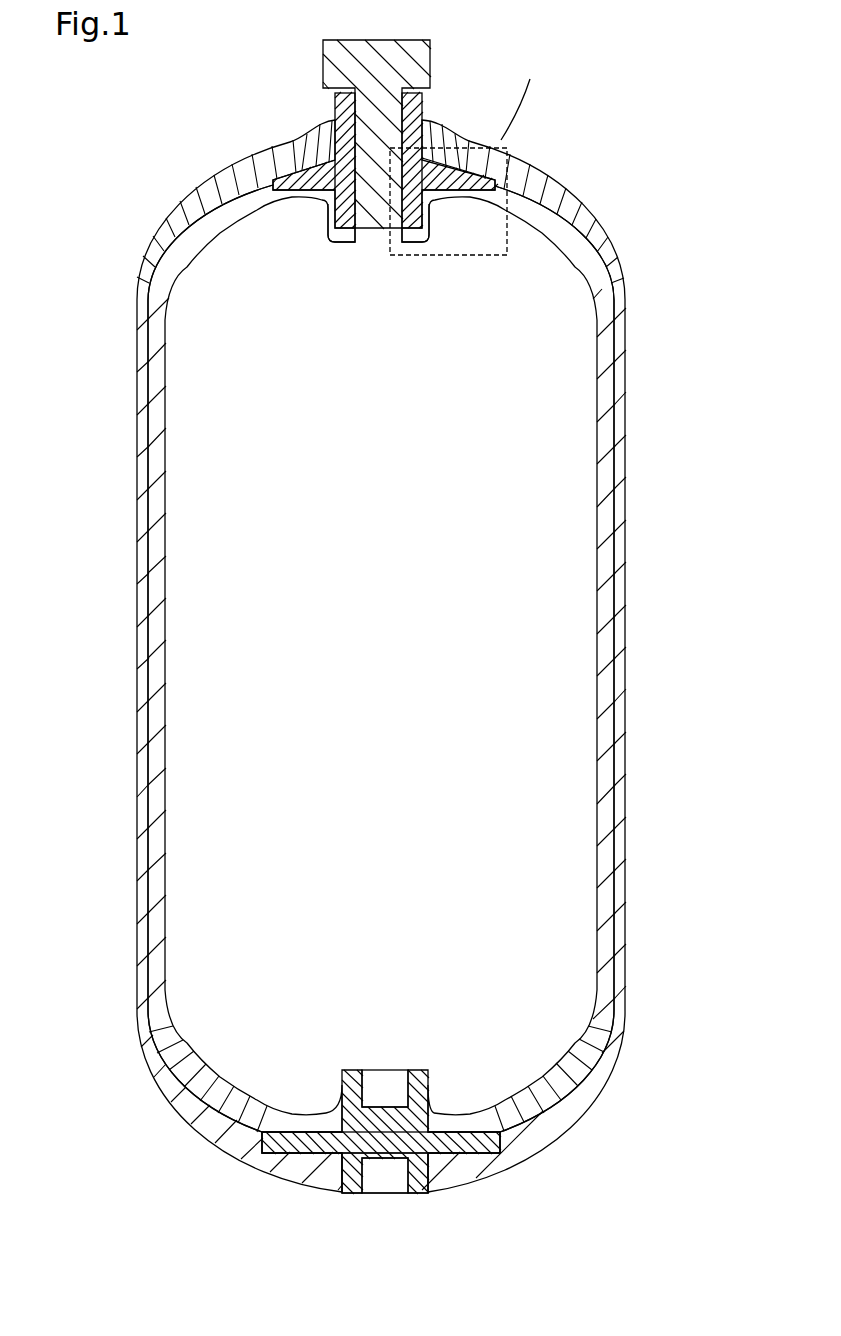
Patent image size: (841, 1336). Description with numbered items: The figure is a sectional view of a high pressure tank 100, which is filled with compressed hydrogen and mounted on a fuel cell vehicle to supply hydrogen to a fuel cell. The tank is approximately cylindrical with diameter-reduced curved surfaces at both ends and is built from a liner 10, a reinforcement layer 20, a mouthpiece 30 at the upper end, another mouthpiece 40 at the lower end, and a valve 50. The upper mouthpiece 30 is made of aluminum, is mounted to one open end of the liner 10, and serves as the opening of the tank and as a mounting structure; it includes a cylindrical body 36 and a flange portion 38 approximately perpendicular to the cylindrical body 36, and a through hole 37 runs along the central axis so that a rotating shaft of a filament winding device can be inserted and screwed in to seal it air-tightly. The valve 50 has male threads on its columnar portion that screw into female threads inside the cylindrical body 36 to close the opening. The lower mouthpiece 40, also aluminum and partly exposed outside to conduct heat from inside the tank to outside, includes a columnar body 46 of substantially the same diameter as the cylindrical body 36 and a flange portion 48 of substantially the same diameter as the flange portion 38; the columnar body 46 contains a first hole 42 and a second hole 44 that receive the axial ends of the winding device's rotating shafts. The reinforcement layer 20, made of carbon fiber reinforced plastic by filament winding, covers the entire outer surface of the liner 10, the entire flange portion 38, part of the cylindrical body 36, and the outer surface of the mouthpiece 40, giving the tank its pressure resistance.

The high pressure tank 100 is at (604, 136).
The liner 10 is at (604, 592).
The reinforcement layer 20 is at (627, 623).
The mouthpiece 30 is at (355, 184).
The cylindrical body 36 is at (335, 110).
The through hole 37 is at (368, 226).
The flange portion 38 is at (302, 168).
The mouthpiece 40 is at (408, 1137).
The first hole 42 is at (392, 1082).
The second hole 44 is at (372, 1188).
The columnar body 46 is at (415, 1193).
The flange portion 48 is at (493, 1178).
The valve 50 is at (325, 53).